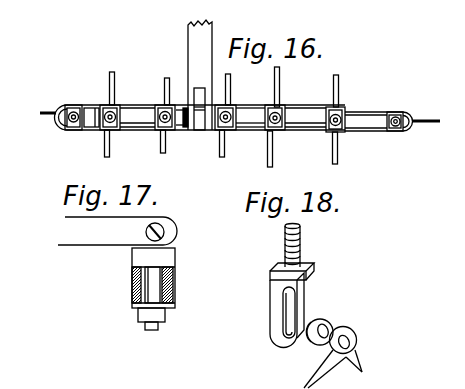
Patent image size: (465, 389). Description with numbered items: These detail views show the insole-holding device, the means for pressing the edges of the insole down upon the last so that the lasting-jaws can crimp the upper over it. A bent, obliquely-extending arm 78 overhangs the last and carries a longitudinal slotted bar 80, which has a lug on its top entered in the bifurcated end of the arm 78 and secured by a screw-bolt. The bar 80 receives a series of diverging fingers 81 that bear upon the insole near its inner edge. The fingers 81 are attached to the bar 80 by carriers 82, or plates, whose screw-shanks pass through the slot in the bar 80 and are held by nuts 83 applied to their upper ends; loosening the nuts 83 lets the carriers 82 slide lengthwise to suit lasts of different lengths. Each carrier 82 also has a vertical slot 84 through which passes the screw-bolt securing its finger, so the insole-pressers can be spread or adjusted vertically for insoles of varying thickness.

In FIG. 16, the bent obliquely-extending arm 78 is at (200, 75).
In FIG. 17, the bent obliquely-extending arm 78 is at (117, 231).
In FIG. 16, the longitudinal slotted bar 80 is at (290, 108).
In FIG. 17, the longitudinal slotted bar 80 is at (164, 289).
In FIG. 16, the diverging fingers 81 is at (344, 119).
In FIG. 18, the diverging fingers 81 is at (341, 353).
In FIG. 18, the carriers 82 is at (271, 286).
In FIG. 16, the nuts 83 is at (391, 112).
In FIG. 18, the vertical slot 84 is at (287, 318).